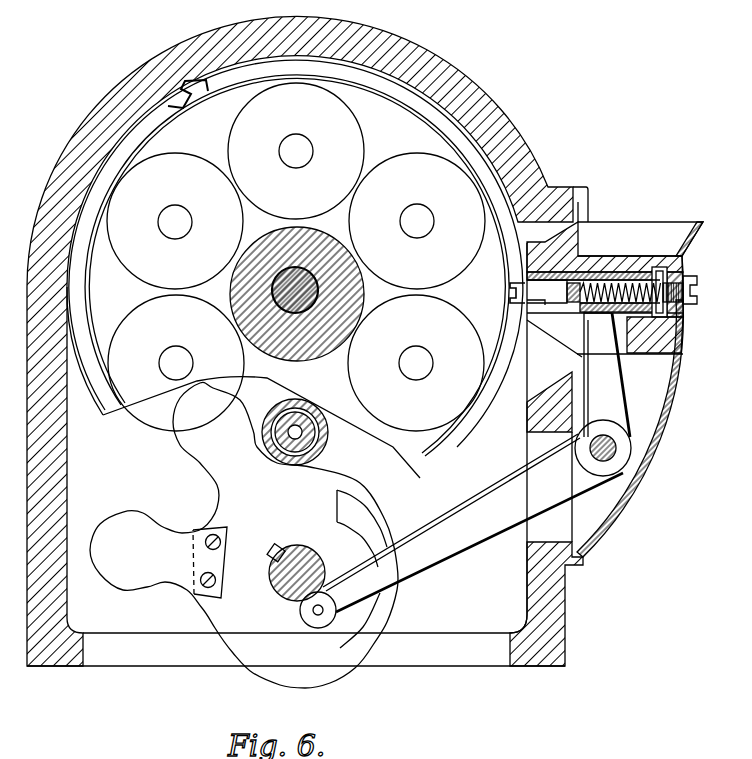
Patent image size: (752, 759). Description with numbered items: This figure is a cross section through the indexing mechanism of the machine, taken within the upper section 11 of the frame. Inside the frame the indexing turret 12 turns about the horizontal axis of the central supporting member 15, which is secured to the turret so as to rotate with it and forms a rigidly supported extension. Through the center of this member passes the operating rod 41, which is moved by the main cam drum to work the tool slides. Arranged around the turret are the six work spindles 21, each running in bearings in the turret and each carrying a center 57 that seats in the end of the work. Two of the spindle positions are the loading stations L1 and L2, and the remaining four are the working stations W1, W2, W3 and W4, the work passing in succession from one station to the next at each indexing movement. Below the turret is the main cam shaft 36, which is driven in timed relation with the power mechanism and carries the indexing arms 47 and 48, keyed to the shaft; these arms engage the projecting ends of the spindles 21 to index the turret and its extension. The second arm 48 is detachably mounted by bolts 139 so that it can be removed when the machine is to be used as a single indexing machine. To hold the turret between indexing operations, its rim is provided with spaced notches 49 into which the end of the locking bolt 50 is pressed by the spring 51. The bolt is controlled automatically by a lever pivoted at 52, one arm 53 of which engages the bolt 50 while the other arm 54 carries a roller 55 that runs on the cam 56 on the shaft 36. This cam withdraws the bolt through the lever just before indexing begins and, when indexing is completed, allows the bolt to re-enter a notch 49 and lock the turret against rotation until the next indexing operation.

The upper section 11 is at (410, 46).
The indexing turret 12 is at (416, 131).
The central supporting member 15 is at (282, 352).
The work spindle 21 is at (328, 446).
The main cam shaft 36 is at (303, 546).
The operating rod 41 is at (303, 313).
The indexing arm 47 is at (189, 437).
The indexing arm 48 is at (140, 524).
The notch 49 is at (178, 100).
The locking bolt 50 is at (547, 295).
The spring 51 is at (618, 292).
The lever pivot 52 is at (612, 457).
The lever arm 53 is at (616, 393).
The lever arm 54 is at (443, 558).
The roller 55 is at (267, 668).
The cam 56 is at (366, 620).
The center 57 is at (193, 222).
The bracket 139 is at (221, 578).
The loading station L1 is at (175, 221).
The loading station L2 is at (296, 151).
The working station W1 is at (297, 443).
The working station W2 is at (417, 221).
The working station W3 is at (176, 363).
The working station W4 is at (416, 363).